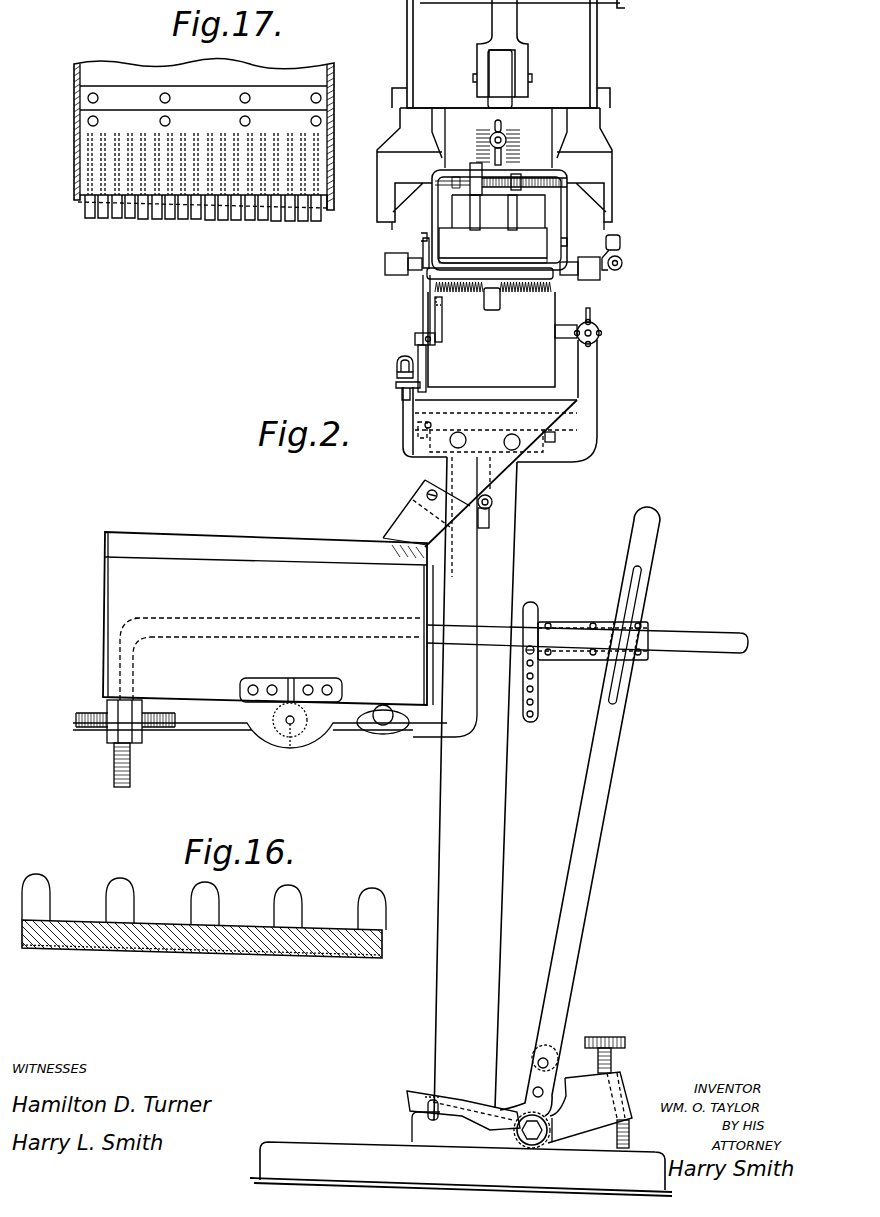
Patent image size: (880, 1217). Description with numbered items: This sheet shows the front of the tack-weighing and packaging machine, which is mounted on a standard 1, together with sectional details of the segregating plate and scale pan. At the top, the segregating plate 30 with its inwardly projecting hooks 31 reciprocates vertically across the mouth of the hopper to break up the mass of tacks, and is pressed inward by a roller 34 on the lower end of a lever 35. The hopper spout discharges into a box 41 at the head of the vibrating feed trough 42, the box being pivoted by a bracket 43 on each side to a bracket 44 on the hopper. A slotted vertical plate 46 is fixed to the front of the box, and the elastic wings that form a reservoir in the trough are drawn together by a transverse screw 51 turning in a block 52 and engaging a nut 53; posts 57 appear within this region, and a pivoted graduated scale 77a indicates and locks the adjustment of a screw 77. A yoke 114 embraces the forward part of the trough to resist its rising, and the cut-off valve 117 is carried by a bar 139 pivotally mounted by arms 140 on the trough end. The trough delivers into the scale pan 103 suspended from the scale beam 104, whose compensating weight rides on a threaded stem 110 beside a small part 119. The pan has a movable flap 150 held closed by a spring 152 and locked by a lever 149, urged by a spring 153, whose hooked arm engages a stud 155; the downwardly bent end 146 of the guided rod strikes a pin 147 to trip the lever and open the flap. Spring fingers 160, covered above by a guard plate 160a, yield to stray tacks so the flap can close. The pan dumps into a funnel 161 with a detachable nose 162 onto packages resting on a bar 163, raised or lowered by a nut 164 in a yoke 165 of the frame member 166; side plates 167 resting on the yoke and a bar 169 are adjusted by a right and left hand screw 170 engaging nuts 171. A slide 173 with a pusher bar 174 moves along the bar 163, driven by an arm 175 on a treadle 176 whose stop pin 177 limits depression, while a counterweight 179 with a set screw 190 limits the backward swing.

In FIG. 2, the standard 1 is at (461, 826).
In FIG. 16, the segregating plate 30 is at (253, 944).
In FIG. 2, the segregating plate 30 is at (516, 54).
In FIG. 16, the hooks 31 is at (121, 882).
In FIG. 2, the roller 34 is at (500, 66).
In FIG. 2, the lever 35 is at (514, 22).
In FIG. 2, the box 41 is at (600, 165).
In FIG. 2, the feed trough 42 is at (492, 236).
In FIG. 2, the bracket 43 is at (395, 222).
In FIG. 2, the bracket 44 is at (378, 168).
In FIG. 2, the vertical plate 46 is at (498, 138).
In FIG. 2, the transverse screw 51 is at (567, 183).
In FIG. 2, the block 52 is at (470, 170).
In FIG. 2, the nut 53 is at (518, 178).
In FIG. 2, the posts 57 is at (498, 212).
In FIG. 2, the screw 77 is at (600, 331).
In FIG. 2, the graduated scale 77a is at (592, 316).
In FIG. 17, the scale pan 103 is at (204, 134).
In FIG. 2, the scale beam 104 is at (398, 276).
In FIG. 2, the threaded stem 110 is at (621, 270).
In FIG. 2, the yoke 114 is at (438, 182).
In FIG. 2, the cut-off valve 117 is at (537, 252).
In FIG. 2, the stop 119 is at (621, 242).
In FIG. 2, the bar 139 is at (462, 267).
In FIG. 2, the arms 140 is at (432, 248).
In FIG. 2, the downwardly bent end 146 is at (397, 369).
In FIG. 2, the pin 147 is at (399, 387).
In FIG. 2, the lever 149 is at (427, 372).
In FIG. 2, the movable flap 150 is at (491, 339).
In FIG. 2, the spring 152 is at (527, 292).
In FIG. 2, the spring 153 is at (442, 320).
In FIG. 2, the stud 155 is at (418, 334).
In FIG. 17, the spring fingers 160 is at (130, 212).
In FIG. 17, the guard plate 160a is at (203, 154).
In FIG. 2, the funnel 161 is at (506, 463).
In FIG. 2, the detachable nose 162 is at (426, 519).
In FIG. 2, the bar 163 is at (587, 639).
In FIG. 2, the nut 164 is at (75, 721).
In FIG. 2, the yoke 165 is at (112, 737).
In FIG. 2, the projecting member 166 is at (205, 724).
In FIG. 2, the side plates 167 is at (268, 618).
In FIG. 2, the bar 169 is at (383, 726).
In FIG. 2, the right and left hand screw 170 is at (288, 725).
In FIG. 2, the nuts 171 is at (293, 740).
In FIG. 2, the slide 173 is at (582, 615).
In FIG. 2, the pusher bar 174 is at (533, 603).
In FIG. 2, the arm 175 is at (612, 720).
In FIG. 2, the treadle 176 is at (481, 1104).
In FIG. 2, the stop pin 177 is at (426, 1110).
In FIG. 2, the counterweight 179 is at (633, 1104).
In FIG. 2, the set screw 190 is at (630, 1132).